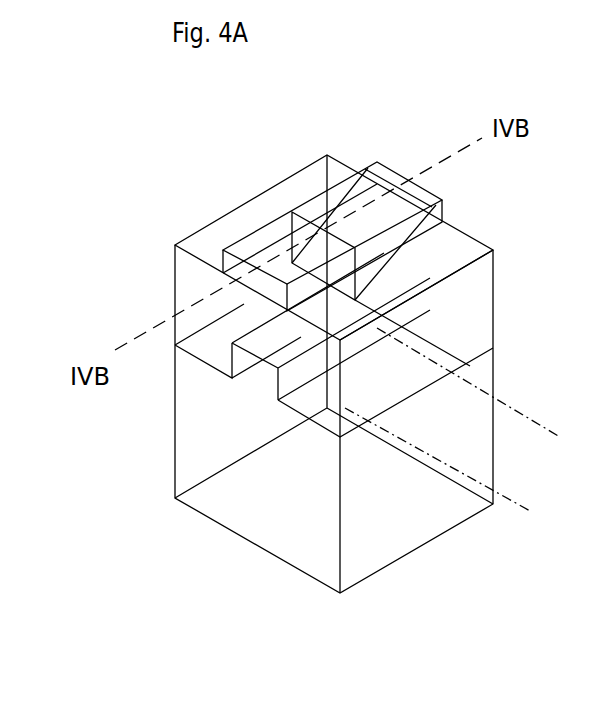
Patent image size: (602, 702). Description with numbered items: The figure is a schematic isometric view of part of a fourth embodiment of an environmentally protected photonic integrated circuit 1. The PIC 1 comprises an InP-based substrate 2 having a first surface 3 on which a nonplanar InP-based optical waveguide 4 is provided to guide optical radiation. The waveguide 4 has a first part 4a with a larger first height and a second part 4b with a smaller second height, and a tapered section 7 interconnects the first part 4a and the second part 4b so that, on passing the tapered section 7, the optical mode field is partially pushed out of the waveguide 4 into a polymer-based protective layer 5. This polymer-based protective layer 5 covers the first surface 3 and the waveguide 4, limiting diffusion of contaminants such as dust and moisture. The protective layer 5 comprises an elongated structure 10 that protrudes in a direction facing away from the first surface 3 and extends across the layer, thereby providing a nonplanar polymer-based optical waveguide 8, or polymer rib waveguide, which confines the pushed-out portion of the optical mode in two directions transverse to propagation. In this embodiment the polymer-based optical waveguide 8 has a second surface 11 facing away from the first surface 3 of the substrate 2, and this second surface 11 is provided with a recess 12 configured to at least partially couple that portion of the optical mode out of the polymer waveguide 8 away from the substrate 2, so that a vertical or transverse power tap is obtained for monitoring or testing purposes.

The environmentally protected photonic integrated circuit 1 is at (396, 90).
The InP-based substrate 2 is at (402, 537).
The first surface 3 is at (197, 343).
The nonplanar InP-based optical waveguide 4 is at (239, 331).
The first part of the waveguide 4a is at (342, 437).
The second part of the waveguide 4b is at (394, 316).
The polymer-based protective layer 5 is at (475, 308).
The tapered section 7 is at (560, 437).
The nonplanar polymer-based optical waveguide 8 is at (362, 142).
The elongated structure 10 is at (443, 212).
The second surface 11 is at (248, 236).
The recess 12 is at (364, 246).